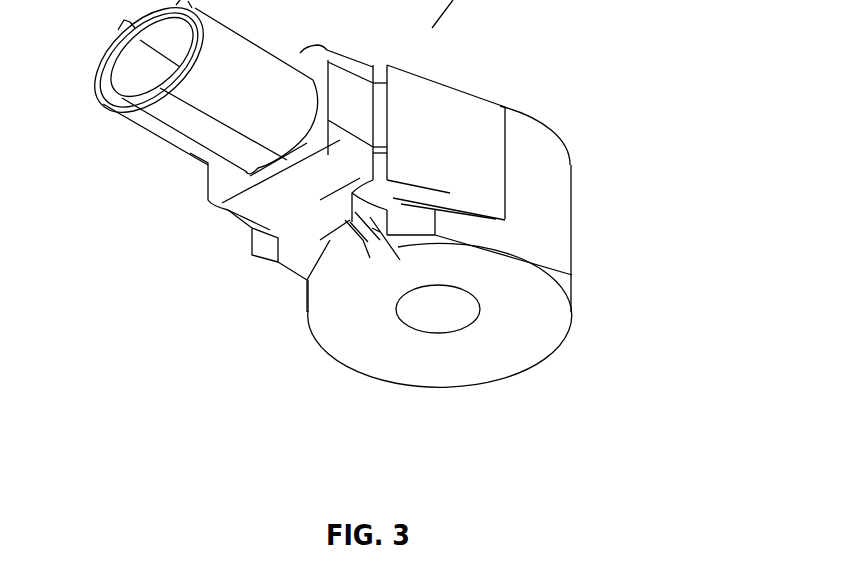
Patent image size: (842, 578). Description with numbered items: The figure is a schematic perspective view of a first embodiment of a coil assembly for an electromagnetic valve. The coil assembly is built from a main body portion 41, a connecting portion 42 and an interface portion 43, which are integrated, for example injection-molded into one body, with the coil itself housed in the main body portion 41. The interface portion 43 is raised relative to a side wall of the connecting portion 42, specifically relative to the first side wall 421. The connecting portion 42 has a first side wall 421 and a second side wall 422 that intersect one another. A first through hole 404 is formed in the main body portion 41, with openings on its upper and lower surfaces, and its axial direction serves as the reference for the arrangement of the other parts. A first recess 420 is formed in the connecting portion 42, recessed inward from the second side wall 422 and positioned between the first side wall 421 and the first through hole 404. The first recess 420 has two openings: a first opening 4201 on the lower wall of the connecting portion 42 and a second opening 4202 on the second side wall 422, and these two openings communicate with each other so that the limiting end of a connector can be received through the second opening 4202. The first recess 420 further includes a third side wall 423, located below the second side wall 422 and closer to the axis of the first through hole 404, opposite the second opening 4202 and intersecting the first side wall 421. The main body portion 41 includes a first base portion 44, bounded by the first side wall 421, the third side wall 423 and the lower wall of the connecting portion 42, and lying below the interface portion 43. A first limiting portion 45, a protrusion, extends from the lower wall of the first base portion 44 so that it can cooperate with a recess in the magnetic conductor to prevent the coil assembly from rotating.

The main body portion 41 is at (540, 200).
The connecting portion 42 is at (443, 117).
The interface portion 43 is at (280, 192).
The first base portion 44 is at (366, 233).
The first limiting portion 45 is at (328, 257).
The first through hole 404 is at (466, 320).
The first recess 420 is at (400, 218).
The first side wall 421 is at (312, 235).
The second side wall 422 is at (458, 175).
The third side wall 423 is at (380, 232).
The first opening 4201 is at (384, 238).
The second opening 4202 is at (375, 208).